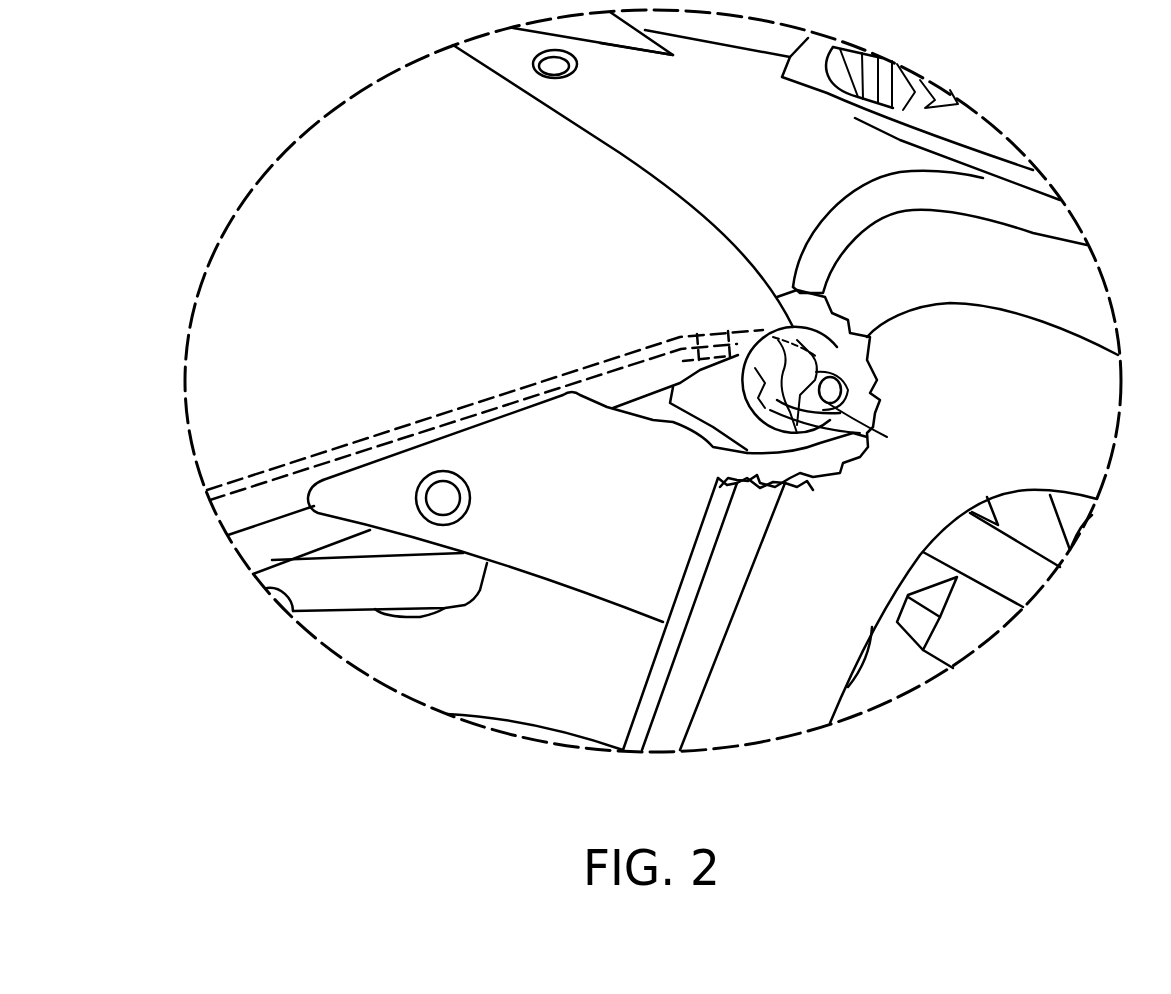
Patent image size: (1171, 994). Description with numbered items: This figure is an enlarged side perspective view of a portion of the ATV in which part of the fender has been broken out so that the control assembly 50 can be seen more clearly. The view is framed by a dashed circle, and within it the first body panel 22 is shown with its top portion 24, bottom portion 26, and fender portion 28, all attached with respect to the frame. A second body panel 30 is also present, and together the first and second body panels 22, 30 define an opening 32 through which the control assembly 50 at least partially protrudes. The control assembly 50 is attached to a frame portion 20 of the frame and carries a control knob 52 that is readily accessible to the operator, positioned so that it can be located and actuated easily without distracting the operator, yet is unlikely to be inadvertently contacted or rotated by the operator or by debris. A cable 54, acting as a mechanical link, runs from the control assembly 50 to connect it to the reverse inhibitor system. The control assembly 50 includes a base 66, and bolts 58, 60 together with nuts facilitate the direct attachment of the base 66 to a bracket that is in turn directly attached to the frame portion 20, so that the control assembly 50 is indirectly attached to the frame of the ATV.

The frame portion 20 is at (777, 442).
The first body panel 22 is at (853, 143).
The top portion 24 is at (640, 134).
The bottom portion 26 is at (488, 432).
The fender portion 28 is at (1092, 267).
The second body panel 30 is at (302, 152).
The opening 32 is at (657, 407).
The control assembly 50 is at (818, 328).
The control knob 52 is at (855, 410).
The cable 54 is at (343, 440).
The bolt 58 is at (843, 388).
The bolt 60 is at (772, 310).
The base 66 is at (738, 330).